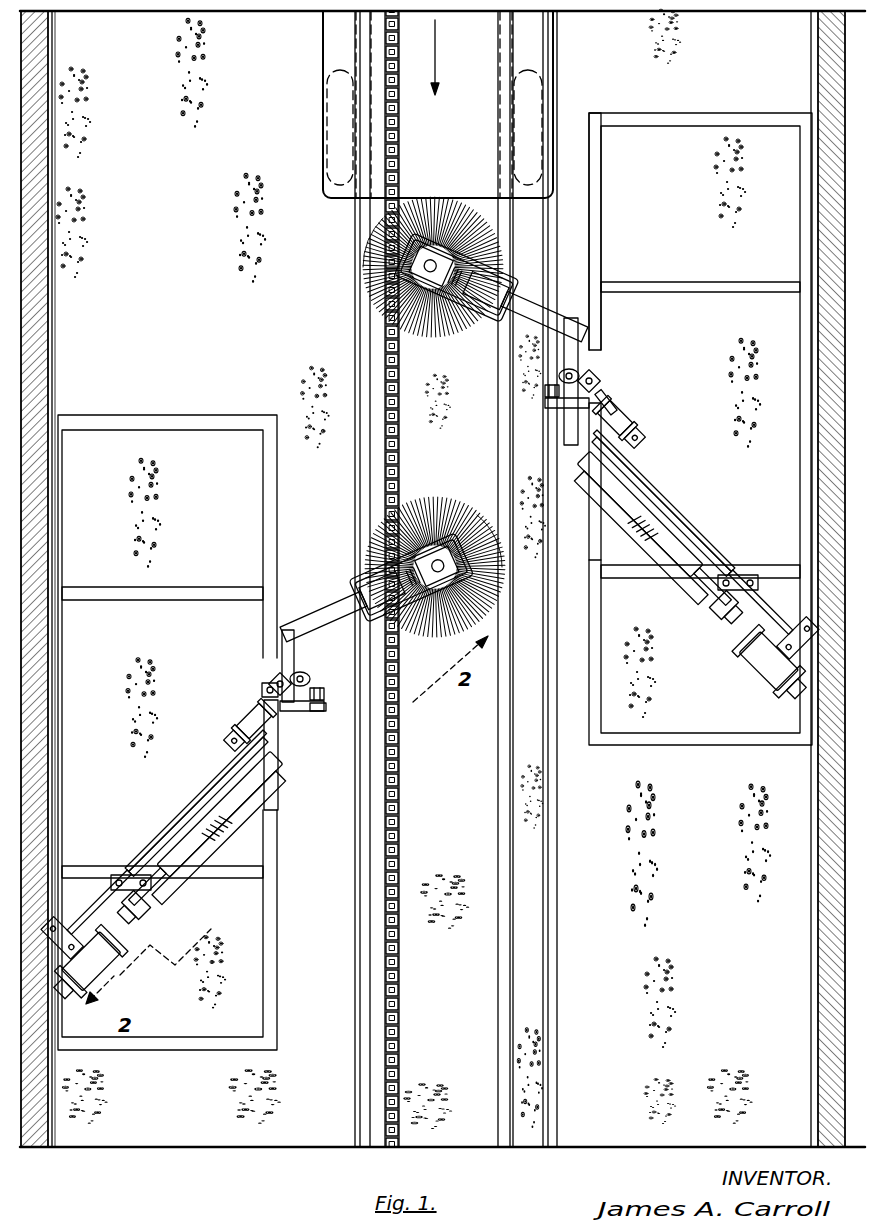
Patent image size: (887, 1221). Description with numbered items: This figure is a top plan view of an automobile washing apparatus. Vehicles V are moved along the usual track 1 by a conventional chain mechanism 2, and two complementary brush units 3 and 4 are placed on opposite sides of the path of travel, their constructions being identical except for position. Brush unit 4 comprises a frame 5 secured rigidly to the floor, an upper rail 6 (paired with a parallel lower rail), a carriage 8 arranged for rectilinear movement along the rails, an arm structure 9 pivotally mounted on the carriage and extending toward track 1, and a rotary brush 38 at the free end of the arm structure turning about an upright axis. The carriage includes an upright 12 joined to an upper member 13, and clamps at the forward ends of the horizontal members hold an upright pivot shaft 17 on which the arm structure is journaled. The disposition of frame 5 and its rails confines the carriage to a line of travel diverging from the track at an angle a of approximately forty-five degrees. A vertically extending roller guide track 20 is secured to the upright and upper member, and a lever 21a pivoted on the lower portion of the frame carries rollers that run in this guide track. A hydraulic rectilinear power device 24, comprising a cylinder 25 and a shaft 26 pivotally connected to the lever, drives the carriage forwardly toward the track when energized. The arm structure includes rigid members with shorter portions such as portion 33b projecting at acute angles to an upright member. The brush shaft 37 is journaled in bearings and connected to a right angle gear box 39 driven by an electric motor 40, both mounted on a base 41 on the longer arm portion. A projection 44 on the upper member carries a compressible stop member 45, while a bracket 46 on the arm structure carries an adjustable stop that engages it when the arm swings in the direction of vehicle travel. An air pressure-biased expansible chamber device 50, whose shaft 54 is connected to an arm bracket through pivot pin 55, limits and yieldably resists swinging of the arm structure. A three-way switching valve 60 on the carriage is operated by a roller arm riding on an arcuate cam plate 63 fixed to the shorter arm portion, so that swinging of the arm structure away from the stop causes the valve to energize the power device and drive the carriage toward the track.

The track 1 is at (520, 775).
The chain mechanism 2 is at (398, 832).
The brush unit 3 is at (343, 557).
The brush unit 4 is at (568, 305).
The frame 5 is at (732, 112).
The upper rail 6 is at (704, 540).
The carriage 8 is at (624, 512).
The arm structure 9 is at (532, 310).
The upright 12 is at (590, 500).
The upper member 13 is at (640, 502).
The pivot shaft 17 is at (558, 431).
The roller guide track 20 is at (625, 468).
The lever 21a is at (658, 575).
The hydraulic rectilinear power device 24 is at (768, 674).
The cylinder 25 is at (778, 686).
The shaft 26 is at (724, 630).
The shorter straight portion 33b is at (596, 336).
The shaft 37 is at (450, 502).
The rotary brush 38 is at (406, 200).
The right angle gear box 39 is at (374, 274).
The electric motor 40 is at (476, 318).
The base 41 is at (503, 264).
The projection 44 is at (548, 401).
The stop member 45 is at (316, 710).
The bracket 46 is at (545, 388).
The air pressure-biased expansible chamber device 50 is at (618, 424).
The shaft 54 is at (610, 400).
The pivot pin 55 is at (264, 686).
The three-way switching valve 60 is at (604, 374).
The cam plate 63 is at (590, 362).
The vehicle V is at (537, 56).
The angle a is at (155, 836).